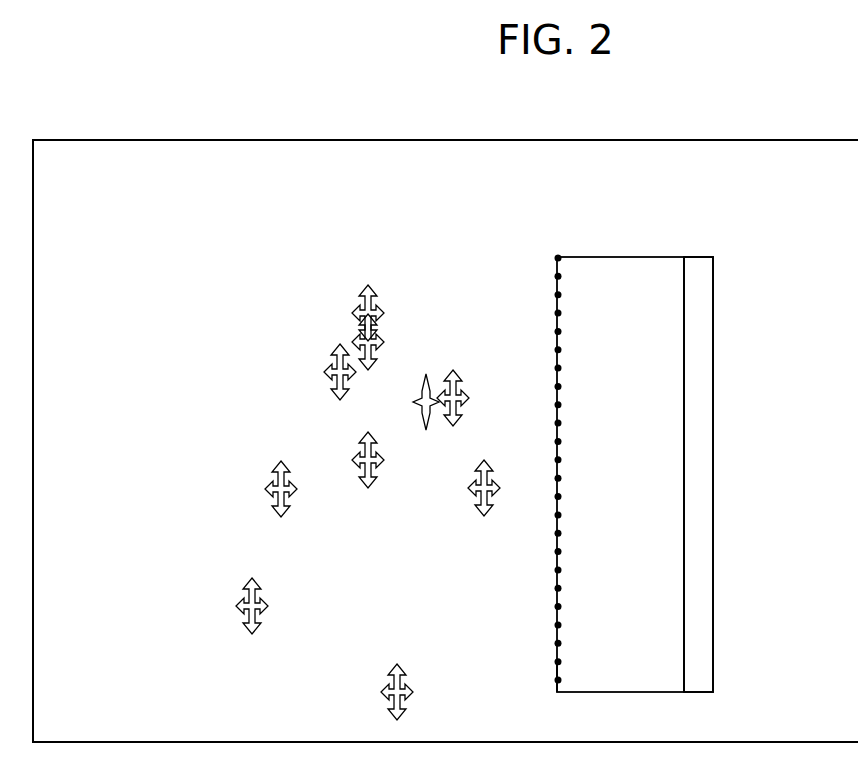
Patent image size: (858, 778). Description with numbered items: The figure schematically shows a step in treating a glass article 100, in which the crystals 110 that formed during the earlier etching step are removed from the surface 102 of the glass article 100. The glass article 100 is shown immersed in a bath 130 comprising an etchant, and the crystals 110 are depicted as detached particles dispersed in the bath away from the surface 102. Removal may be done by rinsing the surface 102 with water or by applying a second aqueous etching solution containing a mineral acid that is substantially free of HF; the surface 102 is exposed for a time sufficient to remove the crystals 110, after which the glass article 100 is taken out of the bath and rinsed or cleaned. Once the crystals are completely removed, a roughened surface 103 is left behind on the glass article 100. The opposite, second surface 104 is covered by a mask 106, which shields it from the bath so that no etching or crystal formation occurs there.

The glass article 100 is at (635, 474).
The surface 102 is at (562, 670).
The roughened surface 103 is at (550, 515).
The second surface 104 is at (685, 547).
The mask 106 is at (698, 337).
The crystals 110 is at (243, 572).
The bath 130 is at (445, 441).